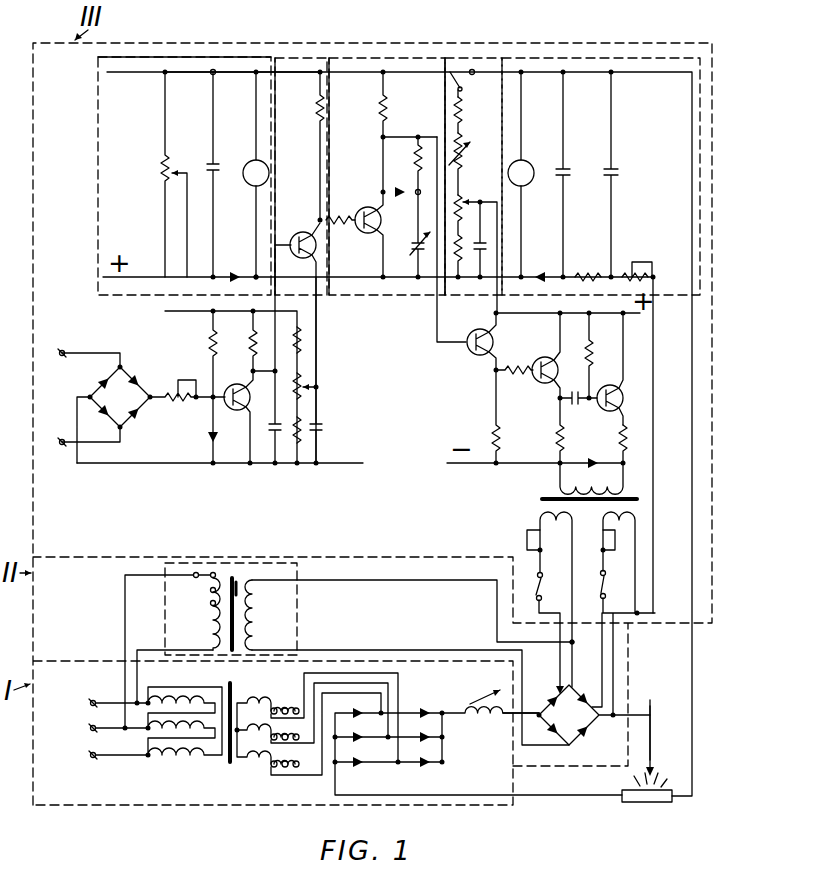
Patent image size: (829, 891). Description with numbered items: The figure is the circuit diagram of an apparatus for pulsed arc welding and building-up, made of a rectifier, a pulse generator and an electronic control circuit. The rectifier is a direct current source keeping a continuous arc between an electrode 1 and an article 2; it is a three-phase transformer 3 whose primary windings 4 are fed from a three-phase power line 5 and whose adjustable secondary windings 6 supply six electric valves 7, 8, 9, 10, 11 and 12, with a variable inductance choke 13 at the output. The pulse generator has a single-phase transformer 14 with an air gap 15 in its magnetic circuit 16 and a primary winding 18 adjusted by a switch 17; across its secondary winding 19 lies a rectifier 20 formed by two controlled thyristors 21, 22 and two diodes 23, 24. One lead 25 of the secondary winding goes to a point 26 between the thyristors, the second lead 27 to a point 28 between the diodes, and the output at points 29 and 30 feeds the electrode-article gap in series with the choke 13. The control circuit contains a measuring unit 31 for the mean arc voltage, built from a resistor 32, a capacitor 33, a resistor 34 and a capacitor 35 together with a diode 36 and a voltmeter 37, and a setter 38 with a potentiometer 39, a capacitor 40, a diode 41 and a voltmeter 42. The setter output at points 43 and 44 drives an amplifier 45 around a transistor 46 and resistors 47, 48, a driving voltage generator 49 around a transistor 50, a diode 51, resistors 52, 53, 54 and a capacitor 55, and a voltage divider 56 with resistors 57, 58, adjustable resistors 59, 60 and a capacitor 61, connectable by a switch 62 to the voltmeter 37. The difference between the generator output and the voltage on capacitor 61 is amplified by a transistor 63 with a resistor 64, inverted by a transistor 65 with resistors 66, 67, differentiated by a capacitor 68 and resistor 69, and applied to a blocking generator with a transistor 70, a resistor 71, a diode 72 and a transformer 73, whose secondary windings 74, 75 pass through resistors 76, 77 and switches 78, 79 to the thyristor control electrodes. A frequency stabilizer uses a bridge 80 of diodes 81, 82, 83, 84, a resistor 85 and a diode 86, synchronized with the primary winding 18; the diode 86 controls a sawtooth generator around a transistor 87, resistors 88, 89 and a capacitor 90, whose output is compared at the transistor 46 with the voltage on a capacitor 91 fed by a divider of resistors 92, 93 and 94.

The electrode 1 is at (652, 724).
The article 2 is at (640, 802).
The three-phase transformer 3 is at (220, 760).
The primary windings 4 is at (185, 705).
The three-phase power line 5 is at (103, 729).
The adjustable secondary windings 6 is at (317, 718).
The three-phase electric valve 7 is at (362, 720).
The three-phase electric valve 8 is at (362, 743).
The three-phase electric valve 9 is at (362, 768).
The three-phase electric valve 10 is at (426, 708).
The three-phase electric valve 11 is at (430, 742).
The three-phase electric valve 12 is at (430, 768).
The variable inductance choke 13 is at (495, 697).
The single-phase transformer 14 is at (163, 608).
The air gap 15 is at (240, 585).
The magnetic circuit 16 is at (230, 575).
The switch 17 is at (203, 571).
The primary winding 18 is at (212, 624).
The secondary winding 19 is at (256, 615).
The rectifier 20 is at (594, 715).
The controlled thyristor valve 21 is at (555, 690).
The controlled thyristor valve 22 is at (588, 692).
The uncontrolled diode valve 23 is at (551, 736).
The uncontrolled diode valve 24 is at (589, 733).
The lead 25 is at (348, 578).
The point 26 is at (575, 645).
The second lead 27 is at (345, 650).
The point 28 is at (572, 748).
The point 29 is at (650, 706).
The point 30 is at (530, 717).
The unit for measuring the mean arc voltage value 31 is at (642, 56).
The resistor 32 is at (644, 262).
The capacitor 33 is at (615, 178).
The resistor 34 is at (586, 270).
The capacitor 35 is at (566, 178).
The diode 36 is at (540, 270).
The voltmeter 37 is at (526, 160).
The mean arc voltage value setter 38 is at (96, 115).
The adjustable potentiometer 39 is at (162, 170).
The capacitor 40 is at (213, 160).
The diode 41 is at (236, 272).
The voltmeter 42 is at (252, 160).
The point 43 is at (256, 80).
The point 44 is at (256, 272).
The amplifier 45 is at (302, 56).
The transistor 46 is at (306, 232).
The resistor 47 is at (300, 340).
The resistor 48 is at (316, 122).
The driving voltage generator 49 is at (364, 56).
The transistor 50 is at (368, 233).
The diode 51 is at (403, 198).
The resistor 52 is at (340, 215).
The resistor 53 is at (388, 110).
The resistor 54 is at (414, 162).
The capacitor 55 is at (410, 250).
The voltage divider 56 is at (489, 56).
The resistor 57 is at (464, 118).
The resistor 58 is at (475, 290).
The adjustable resistor 59 is at (466, 158).
The adjustable resistor 60 is at (466, 196).
The capacitor 61 is at (490, 228).
The switch 62 is at (448, 82).
The transistor 63 is at (468, 354).
The resistor 64 is at (490, 432).
The transistor 65 is at (545, 356).
The resistor 66 is at (520, 378).
The resistor 67 is at (556, 437).
The capacitor 68 is at (574, 392).
The resistor 69 is at (597, 340).
The transistor 70 is at (623, 396).
The resistor 71 is at (632, 430).
The diode 72 is at (594, 456).
The transformer 73 is at (555, 498).
The secondary winding 74 is at (622, 562).
The secondary winding 75 is at (558, 599).
The resistor 76 is at (603, 550).
The resistor 77 is at (527, 535).
The switch 78 is at (607, 590).
The switch 79 is at (543, 590).
The full-wave rectifier bridge circuit 80 is at (104, 406).
The diode 81 is at (140, 376).
The diode 82 is at (140, 417).
The diode 83 is at (102, 416).
The diode 84 is at (99, 376).
The resistor 85 is at (181, 402).
The diode 86 is at (209, 450).
The transistor 87 is at (244, 382).
The resistor 88 is at (211, 338).
The resistor 89 is at (255, 337).
The capacitor 90 is at (270, 470).
The capacitor 91 is at (322, 430).
The resistor 92 is at (298, 466).
The resistor 93 is at (304, 394).
The resistor 94 is at (302, 350).